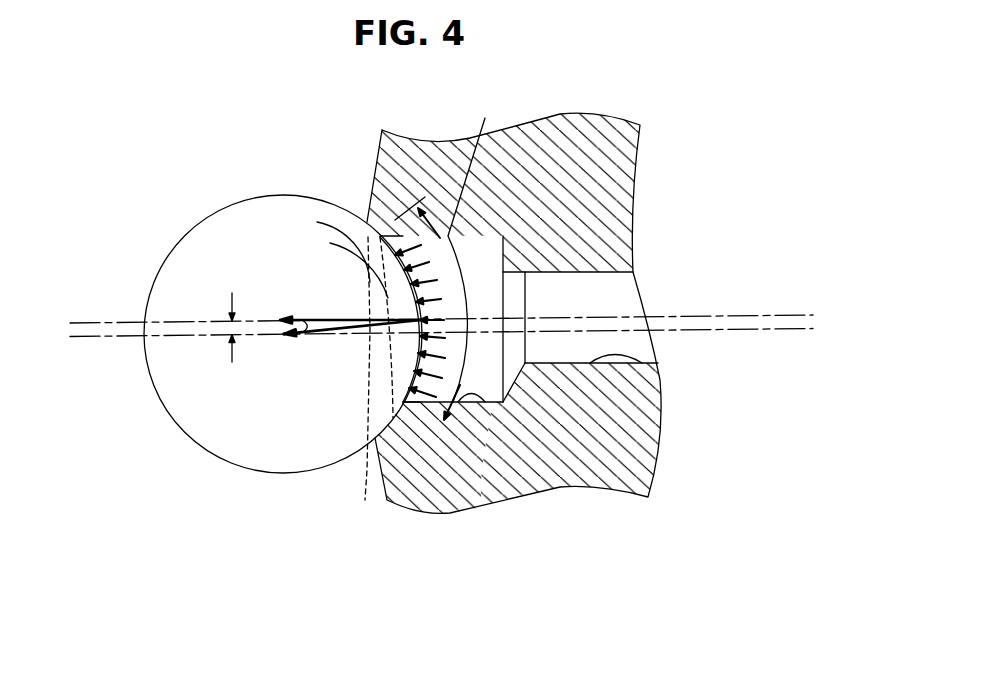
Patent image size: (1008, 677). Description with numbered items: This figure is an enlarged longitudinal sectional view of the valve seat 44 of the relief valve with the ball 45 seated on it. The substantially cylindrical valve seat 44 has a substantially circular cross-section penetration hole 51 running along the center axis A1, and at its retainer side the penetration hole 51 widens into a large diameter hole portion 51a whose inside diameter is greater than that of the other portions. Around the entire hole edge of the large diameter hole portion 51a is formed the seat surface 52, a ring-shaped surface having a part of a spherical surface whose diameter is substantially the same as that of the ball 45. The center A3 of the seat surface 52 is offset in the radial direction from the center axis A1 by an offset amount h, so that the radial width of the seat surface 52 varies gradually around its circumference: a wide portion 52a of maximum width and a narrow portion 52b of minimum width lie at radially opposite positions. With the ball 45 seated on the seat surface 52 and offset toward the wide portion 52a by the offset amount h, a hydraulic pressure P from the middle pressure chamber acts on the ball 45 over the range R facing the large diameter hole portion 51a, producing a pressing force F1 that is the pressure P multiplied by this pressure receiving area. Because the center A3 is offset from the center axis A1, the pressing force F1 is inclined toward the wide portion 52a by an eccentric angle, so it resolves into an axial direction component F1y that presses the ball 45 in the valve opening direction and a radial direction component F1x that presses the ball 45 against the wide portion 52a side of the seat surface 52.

The valve seat 44 is at (568, 475).
The ball 45 is at (210, 415).
The penetration hole 51 is at (660, 390).
The large diameter hole portion 51a is at (465, 350).
The seat surface 52 is at (365, 500).
The wide portion 52a is at (400, 404).
The narrow portion 52b is at (367, 237).
The center axis A1 is at (775, 316).
The center of the seat surface A3 is at (763, 331).
The ball center O is at (285, 335).
The offset amount h is at (230, 328).
The pressing force F1 is at (340, 330).
The radial direction component F1x is at (507, 398).
The axial direction component F1y is at (322, 320).
The range facing the large diameter hole portion R is at (443, 248).
The hydraulic pressure P is at (421, 321).